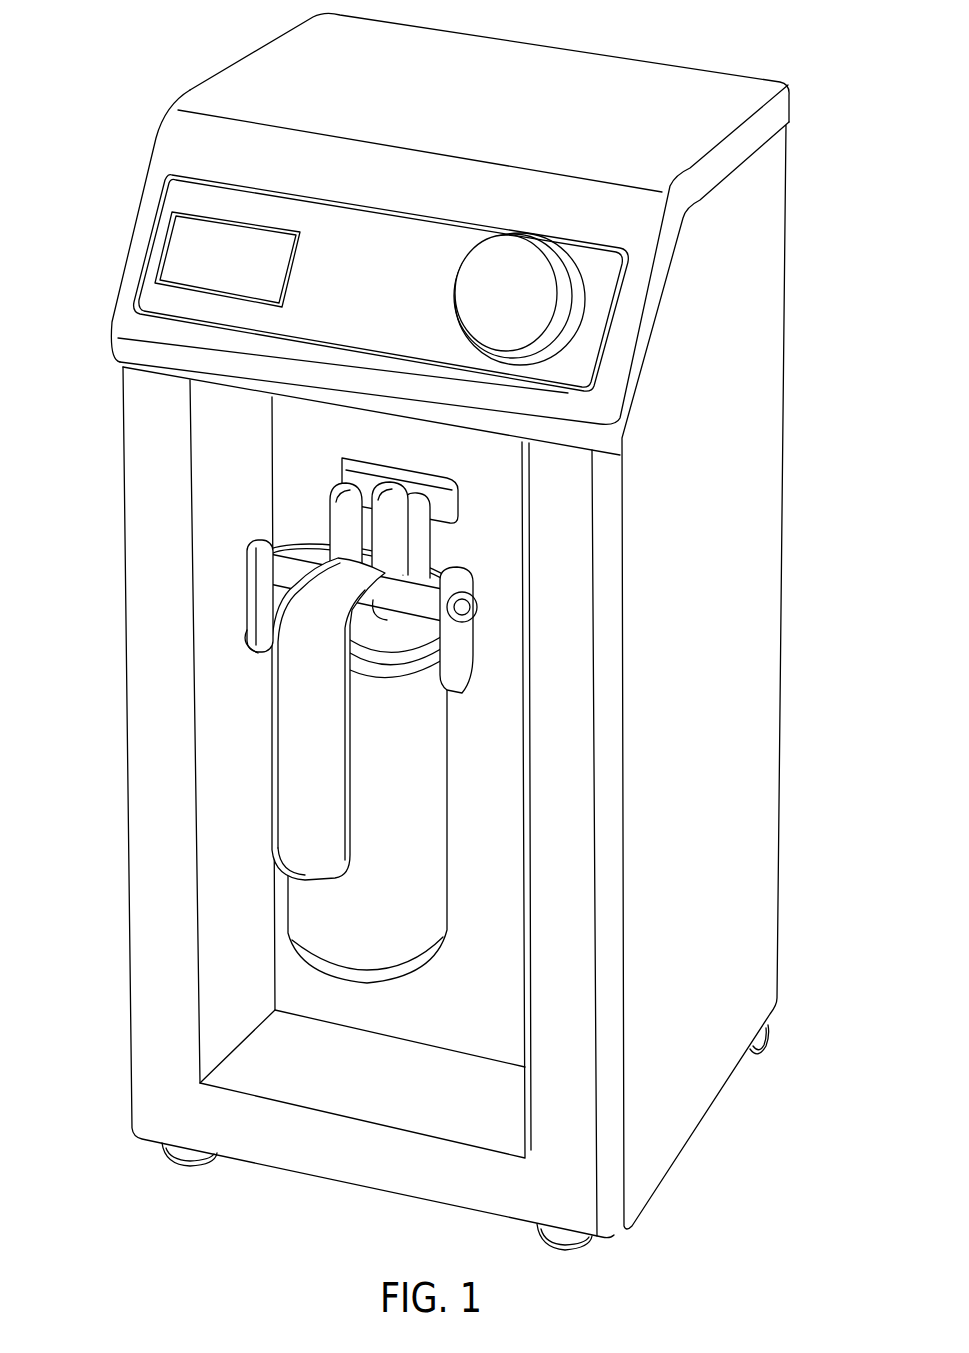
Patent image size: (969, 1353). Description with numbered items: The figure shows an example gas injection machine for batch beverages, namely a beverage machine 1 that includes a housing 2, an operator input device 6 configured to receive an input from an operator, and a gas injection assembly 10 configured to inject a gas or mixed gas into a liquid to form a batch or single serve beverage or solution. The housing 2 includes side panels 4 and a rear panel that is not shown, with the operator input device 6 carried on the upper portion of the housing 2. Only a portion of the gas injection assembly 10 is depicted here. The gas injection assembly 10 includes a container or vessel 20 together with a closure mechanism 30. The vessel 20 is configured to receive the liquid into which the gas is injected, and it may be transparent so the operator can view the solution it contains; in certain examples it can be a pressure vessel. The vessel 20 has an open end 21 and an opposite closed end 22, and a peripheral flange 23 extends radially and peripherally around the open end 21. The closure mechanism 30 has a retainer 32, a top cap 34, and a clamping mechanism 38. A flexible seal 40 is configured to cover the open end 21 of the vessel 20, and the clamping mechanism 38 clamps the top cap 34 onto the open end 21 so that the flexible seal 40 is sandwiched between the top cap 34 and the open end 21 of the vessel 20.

The beverage machine 1 is at (455, 628).
The housing 2 is at (766, 348).
The side panels 4 is at (752, 946).
The operator input device 6 is at (396, 245).
The gas injection assembly 10 is at (118, 792).
The vessel 20 is at (430, 840).
The open end 21 is at (413, 685).
The closed end 22 is at (351, 720).
The peripheral flange 23 is at (398, 678).
The closure mechanism 30 is at (298, 565).
The retainer 32 is at (457, 693).
The top cap 34 is at (278, 602).
The clamping mechanism 38 is at (268, 712).
The flexible seal 40 is at (265, 643).